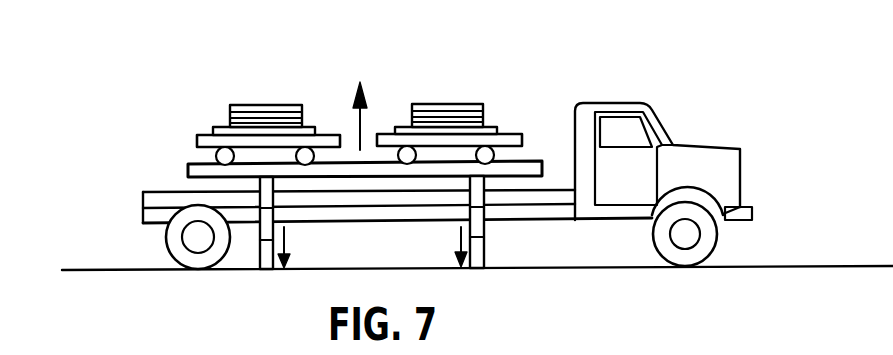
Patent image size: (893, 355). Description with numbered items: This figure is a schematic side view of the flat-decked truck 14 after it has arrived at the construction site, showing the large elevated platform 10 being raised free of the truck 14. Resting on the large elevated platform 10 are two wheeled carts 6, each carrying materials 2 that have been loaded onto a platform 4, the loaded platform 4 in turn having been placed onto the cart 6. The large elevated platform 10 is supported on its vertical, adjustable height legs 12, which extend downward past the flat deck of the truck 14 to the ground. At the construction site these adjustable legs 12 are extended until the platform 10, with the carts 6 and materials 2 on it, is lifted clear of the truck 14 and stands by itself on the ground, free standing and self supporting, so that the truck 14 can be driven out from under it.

The materials 2 is at (282, 105).
The platform 4 is at (214, 127).
The cart 6 is at (206, 131).
The large elevated platform 10 is at (188, 173).
The adjustable height legs 12 is at (262, 253).
The flat-decked truck 14 is at (663, 125).